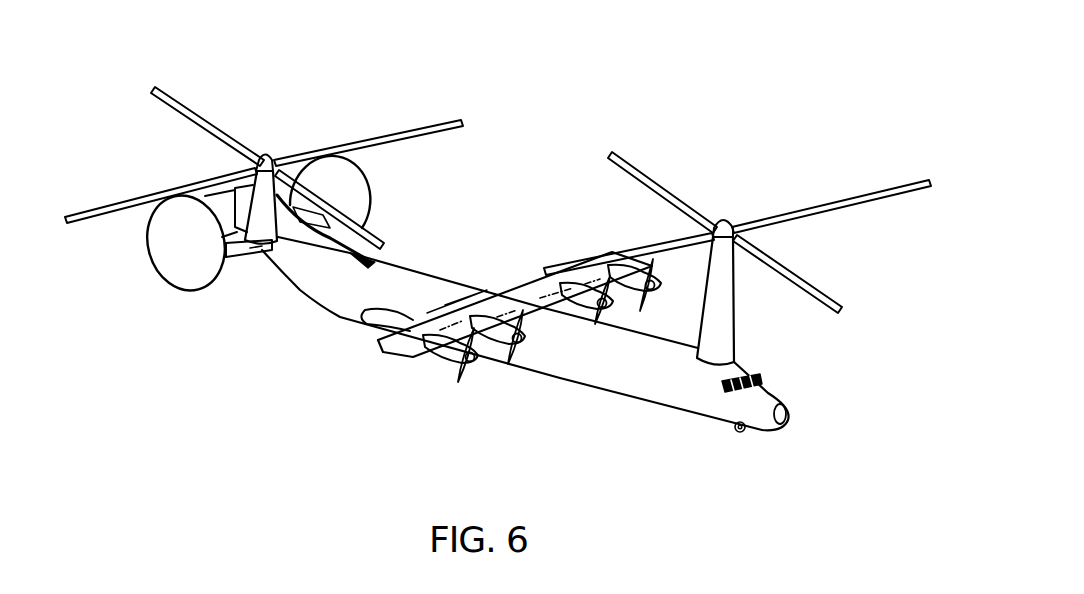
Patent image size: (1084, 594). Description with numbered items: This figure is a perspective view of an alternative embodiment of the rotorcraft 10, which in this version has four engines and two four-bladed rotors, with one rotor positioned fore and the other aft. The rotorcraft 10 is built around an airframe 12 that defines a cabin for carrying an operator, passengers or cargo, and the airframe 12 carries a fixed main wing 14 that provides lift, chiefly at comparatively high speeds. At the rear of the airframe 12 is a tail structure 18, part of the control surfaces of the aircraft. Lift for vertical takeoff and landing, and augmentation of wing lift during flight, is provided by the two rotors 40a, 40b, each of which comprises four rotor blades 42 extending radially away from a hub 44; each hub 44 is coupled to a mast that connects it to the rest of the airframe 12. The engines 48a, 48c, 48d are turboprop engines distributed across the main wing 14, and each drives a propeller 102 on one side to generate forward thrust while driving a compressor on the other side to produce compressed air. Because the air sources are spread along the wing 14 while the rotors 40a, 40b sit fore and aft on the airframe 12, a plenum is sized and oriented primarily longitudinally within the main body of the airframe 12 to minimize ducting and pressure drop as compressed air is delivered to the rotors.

The rotorcraft 10 is at (637, 106).
The airframe 12 is at (683, 403).
The main wing 14 is at (508, 292).
The tail structure 18 is at (238, 277).
The rotor 40a is at (762, 176).
The rotor 40b is at (299, 116).
The rotor blade 42 is at (202, 122).
The hub 44 is at (262, 153).
The engine 48a is at (441, 364).
The engine 48c is at (588, 296).
The engine 48d is at (641, 266).
The propeller 102 is at (474, 379).